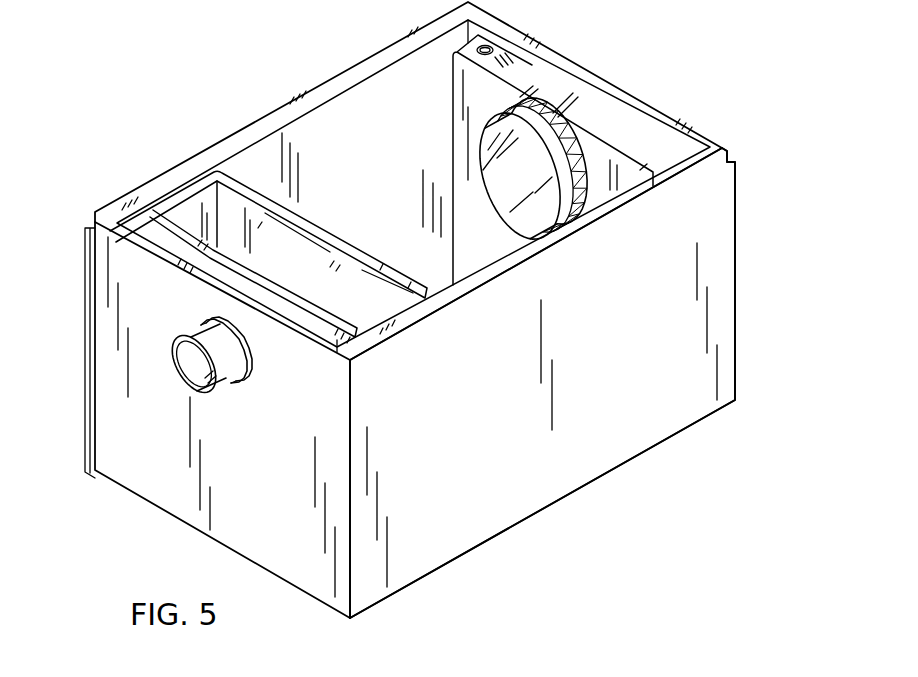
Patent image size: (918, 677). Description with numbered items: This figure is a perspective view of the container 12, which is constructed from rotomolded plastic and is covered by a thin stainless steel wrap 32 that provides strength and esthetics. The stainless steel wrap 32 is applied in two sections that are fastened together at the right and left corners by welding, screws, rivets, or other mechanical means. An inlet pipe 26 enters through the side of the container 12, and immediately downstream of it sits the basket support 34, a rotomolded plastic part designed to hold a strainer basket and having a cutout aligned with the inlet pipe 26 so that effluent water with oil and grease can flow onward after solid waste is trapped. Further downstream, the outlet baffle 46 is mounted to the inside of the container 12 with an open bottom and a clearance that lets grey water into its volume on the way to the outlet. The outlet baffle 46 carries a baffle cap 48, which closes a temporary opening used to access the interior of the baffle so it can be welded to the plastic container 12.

The container 12 is at (712, 150).
The inlet pipe 26 is at (188, 328).
The stainless steel wrap 32 is at (495, 412).
The basket support 34 is at (303, 272).
The outlet baffle 46 is at (525, 73).
The baffle cap 48 is at (533, 185).